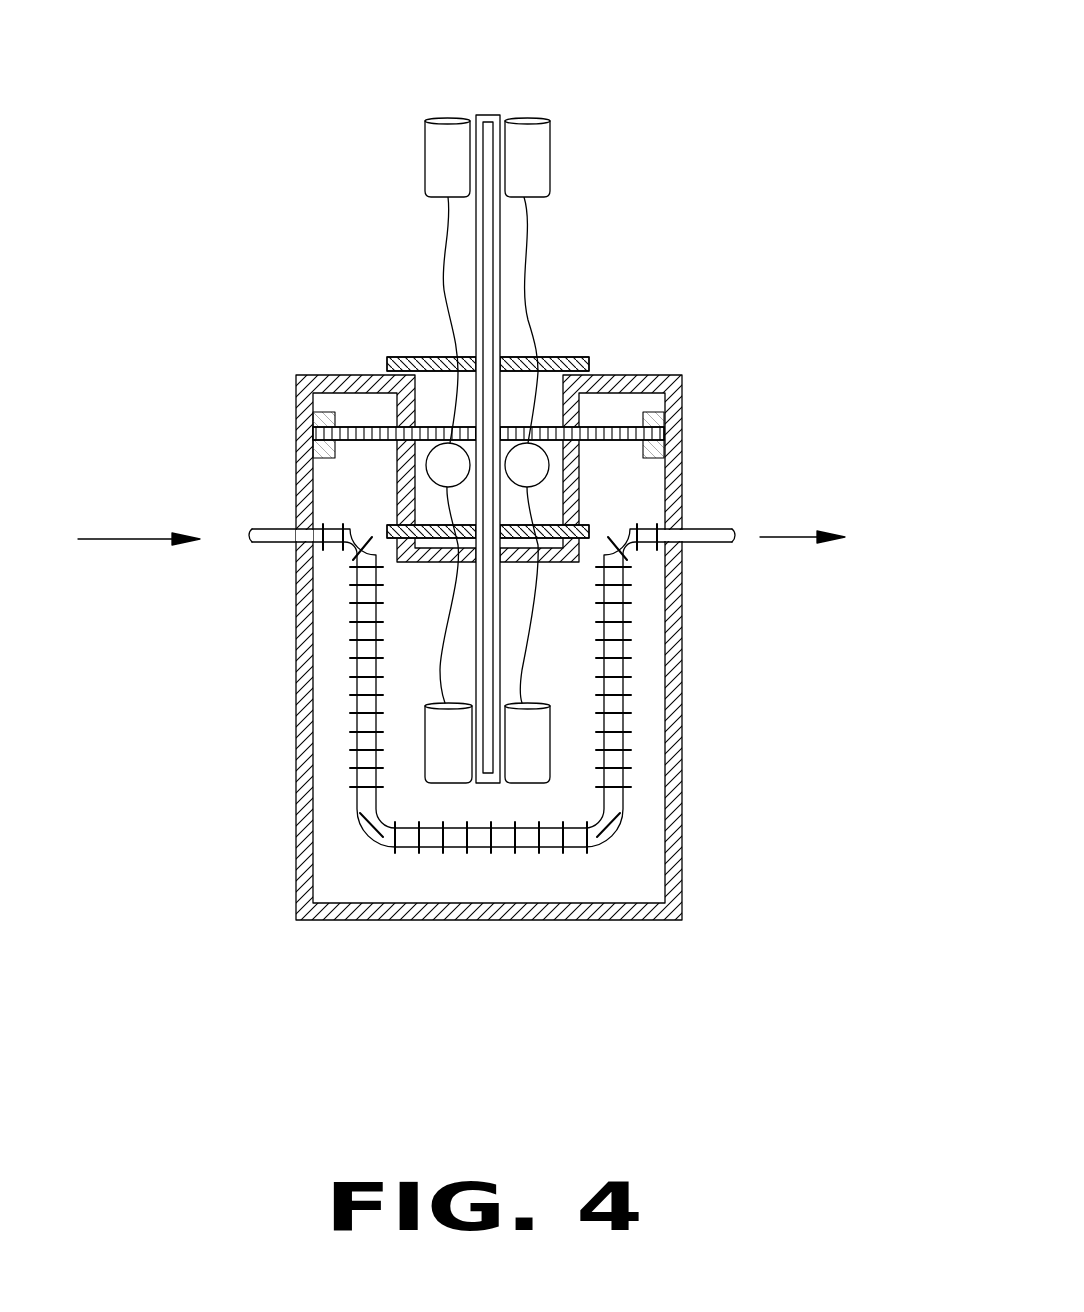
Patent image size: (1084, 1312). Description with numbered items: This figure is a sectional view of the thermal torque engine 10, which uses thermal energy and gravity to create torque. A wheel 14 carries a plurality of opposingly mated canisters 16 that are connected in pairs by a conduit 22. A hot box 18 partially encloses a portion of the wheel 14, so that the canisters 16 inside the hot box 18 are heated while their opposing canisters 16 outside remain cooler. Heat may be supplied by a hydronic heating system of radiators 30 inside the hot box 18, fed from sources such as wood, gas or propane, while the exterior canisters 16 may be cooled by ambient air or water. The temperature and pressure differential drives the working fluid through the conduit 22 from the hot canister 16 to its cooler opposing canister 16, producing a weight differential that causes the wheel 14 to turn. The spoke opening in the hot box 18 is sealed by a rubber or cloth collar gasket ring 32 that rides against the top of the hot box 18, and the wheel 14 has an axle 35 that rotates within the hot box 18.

The torque engine 10 is at (692, 176).
The wheel 14 is at (488, 112).
The canisters 16 is at (538, 160).
The hot box 18 is at (678, 758).
The conduit 22 is at (443, 260).
The radiators 30 is at (363, 690).
The collar gasket ring 32 is at (565, 362).
The axle 35 is at (362, 432).